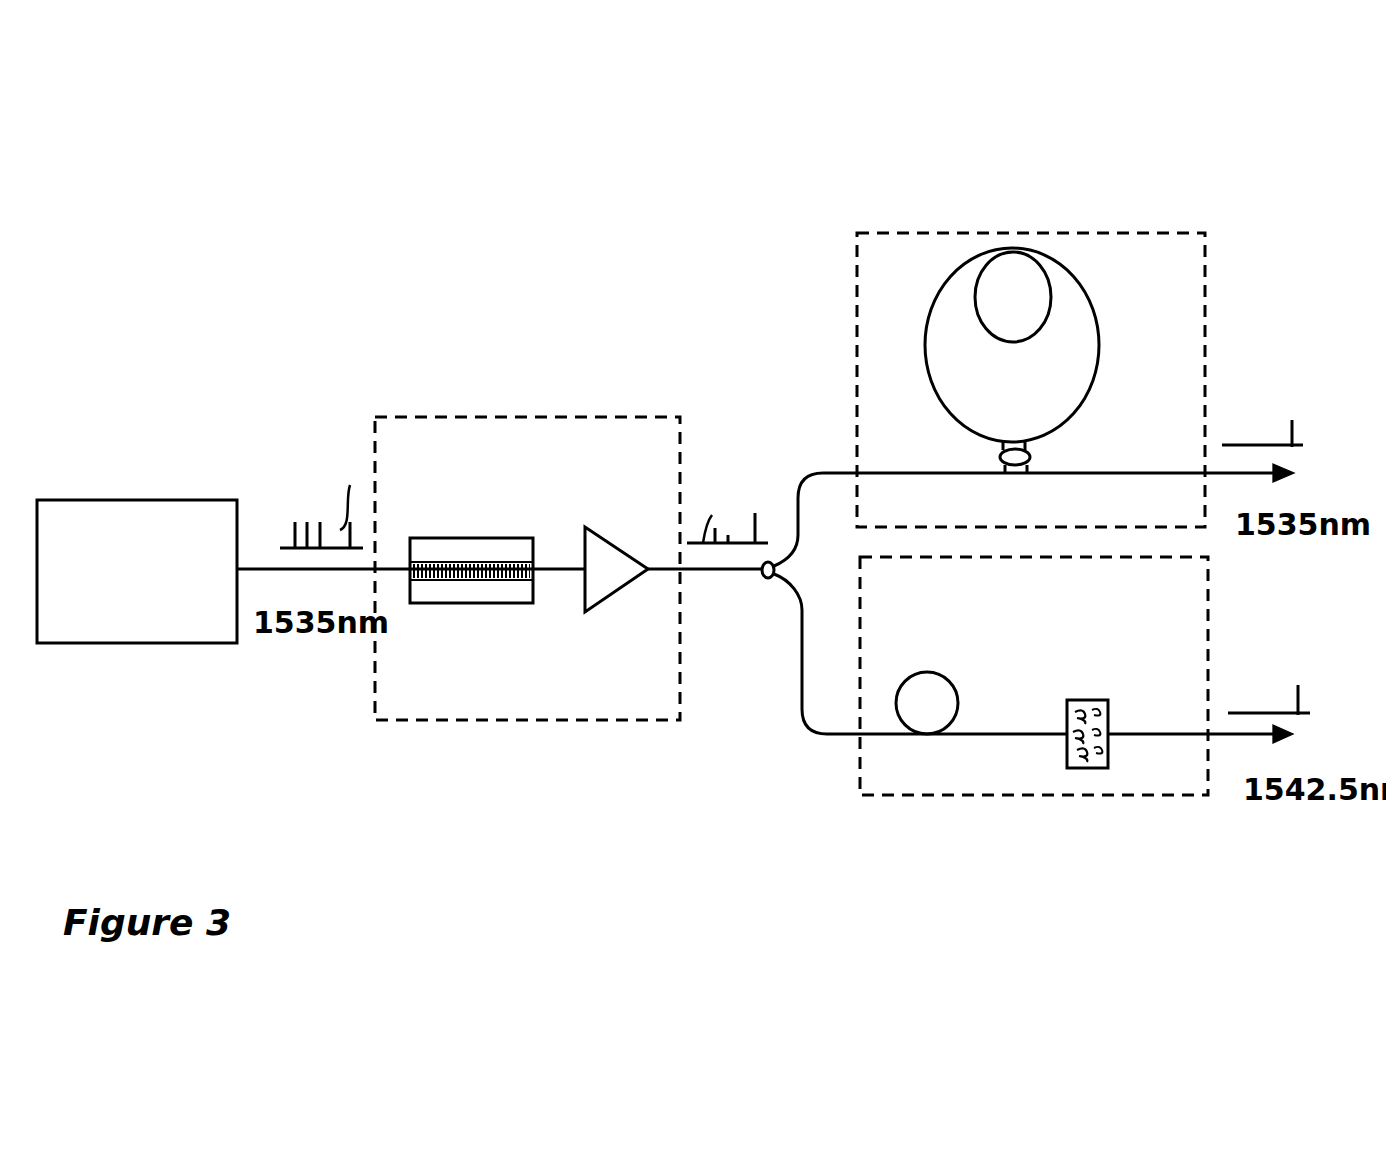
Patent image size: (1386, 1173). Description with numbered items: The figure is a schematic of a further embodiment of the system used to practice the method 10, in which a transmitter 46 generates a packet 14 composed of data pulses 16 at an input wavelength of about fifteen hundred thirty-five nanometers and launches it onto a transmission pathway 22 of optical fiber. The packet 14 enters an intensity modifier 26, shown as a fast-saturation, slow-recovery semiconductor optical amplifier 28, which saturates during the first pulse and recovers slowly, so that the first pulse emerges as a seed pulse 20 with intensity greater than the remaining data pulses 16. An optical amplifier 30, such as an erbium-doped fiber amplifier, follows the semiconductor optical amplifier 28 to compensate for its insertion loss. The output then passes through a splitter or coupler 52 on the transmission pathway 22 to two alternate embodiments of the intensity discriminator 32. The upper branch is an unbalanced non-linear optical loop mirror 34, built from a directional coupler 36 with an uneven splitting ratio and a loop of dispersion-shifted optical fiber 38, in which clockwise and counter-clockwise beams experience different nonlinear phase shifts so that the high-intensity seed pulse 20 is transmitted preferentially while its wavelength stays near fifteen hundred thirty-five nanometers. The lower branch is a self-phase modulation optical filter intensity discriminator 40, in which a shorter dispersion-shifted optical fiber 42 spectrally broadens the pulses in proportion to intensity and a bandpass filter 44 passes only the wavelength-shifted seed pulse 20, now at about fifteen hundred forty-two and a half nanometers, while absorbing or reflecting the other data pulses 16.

The method 10 is at (226, 172).
The packet 14 is at (285, 547).
The data pulses 16 is at (350, 485).
The seed pulse 20 is at (755, 513).
The transmission pathway 22 is at (258, 560).
The intensity modifier 26 is at (478, 720).
The semiconductor optical amplifier 28 is at (465, 590).
The optical amplifier 30 is at (603, 592).
The intensity discriminator 32 is at (1205, 290).
The unbalanced non-linear optical loop mirror 34 is at (1098, 345).
The directional coupler 36 is at (1032, 457).
The dispersion-shifted optical fiber 38 is at (1050, 283).
The self-phase modulation optical filter intensity discriminator 40 is at (1208, 627).
The dispersion-shifted optical fiber 42 is at (945, 685).
The bandpass filter 44 is at (1103, 697).
The transmitter 46 is at (73, 627).
The splitters or couplers 52 is at (766, 580).